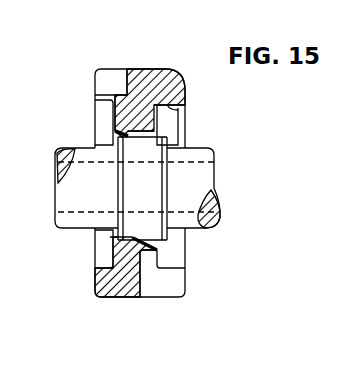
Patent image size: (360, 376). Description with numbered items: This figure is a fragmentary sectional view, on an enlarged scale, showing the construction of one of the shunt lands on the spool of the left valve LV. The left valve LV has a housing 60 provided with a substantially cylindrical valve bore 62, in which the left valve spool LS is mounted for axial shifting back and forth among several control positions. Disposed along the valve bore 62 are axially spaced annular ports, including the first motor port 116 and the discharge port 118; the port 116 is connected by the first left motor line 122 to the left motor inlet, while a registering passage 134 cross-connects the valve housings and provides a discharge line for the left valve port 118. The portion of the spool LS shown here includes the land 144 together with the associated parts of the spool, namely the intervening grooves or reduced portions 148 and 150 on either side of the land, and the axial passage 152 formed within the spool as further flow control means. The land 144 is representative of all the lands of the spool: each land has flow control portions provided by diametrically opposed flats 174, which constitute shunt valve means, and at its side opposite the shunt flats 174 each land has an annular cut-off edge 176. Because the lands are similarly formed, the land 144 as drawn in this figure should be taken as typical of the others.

The left valve LV is at (179, 71).
The left valve spool LS is at (209, 153).
The housing 60 is at (115, 291).
The valve bore 62 is at (118, 241).
The first motor port 116 is at (103, 112).
The discharge port 118 is at (180, 108).
The first left motor line 122 is at (107, 78).
The registering passage 134 is at (171, 290).
The annular land 144 is at (160, 141).
The groove 148 is at (75, 218).
The groove 150 is at (198, 230).
The axial passage 152 is at (212, 206).
The flats 174 is at (120, 133).
The annular cut-off edge 176 is at (165, 125).